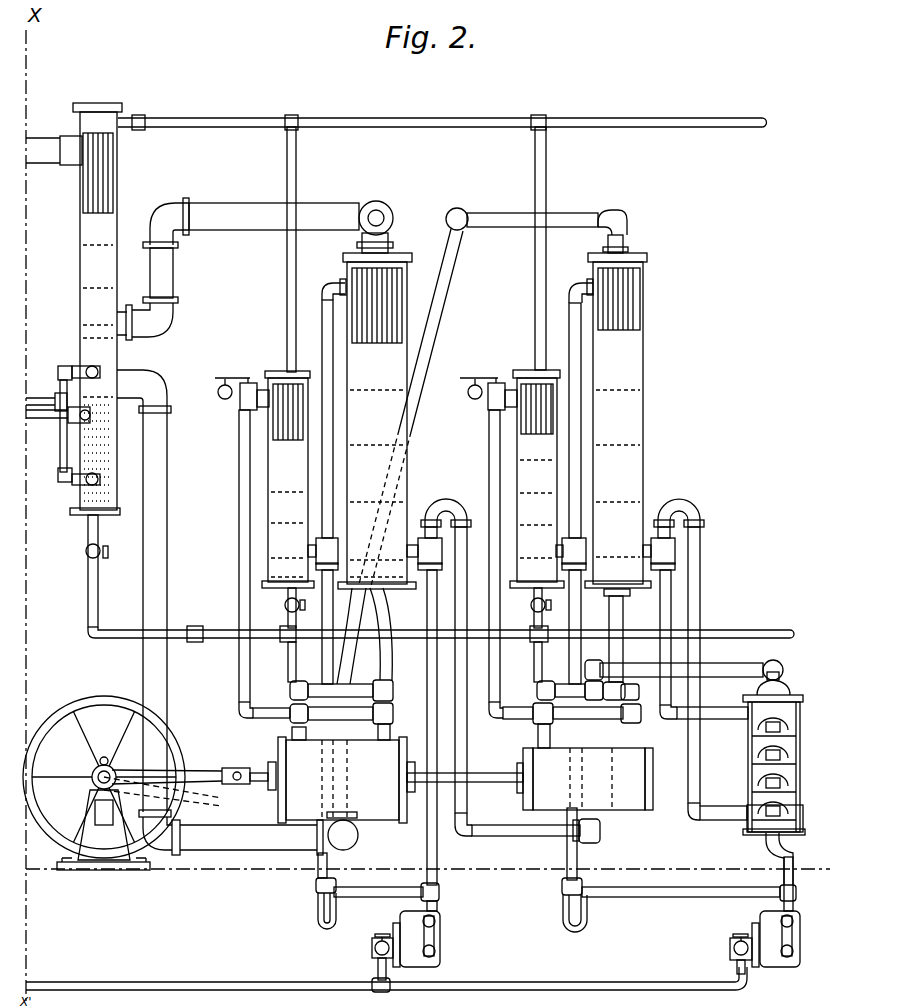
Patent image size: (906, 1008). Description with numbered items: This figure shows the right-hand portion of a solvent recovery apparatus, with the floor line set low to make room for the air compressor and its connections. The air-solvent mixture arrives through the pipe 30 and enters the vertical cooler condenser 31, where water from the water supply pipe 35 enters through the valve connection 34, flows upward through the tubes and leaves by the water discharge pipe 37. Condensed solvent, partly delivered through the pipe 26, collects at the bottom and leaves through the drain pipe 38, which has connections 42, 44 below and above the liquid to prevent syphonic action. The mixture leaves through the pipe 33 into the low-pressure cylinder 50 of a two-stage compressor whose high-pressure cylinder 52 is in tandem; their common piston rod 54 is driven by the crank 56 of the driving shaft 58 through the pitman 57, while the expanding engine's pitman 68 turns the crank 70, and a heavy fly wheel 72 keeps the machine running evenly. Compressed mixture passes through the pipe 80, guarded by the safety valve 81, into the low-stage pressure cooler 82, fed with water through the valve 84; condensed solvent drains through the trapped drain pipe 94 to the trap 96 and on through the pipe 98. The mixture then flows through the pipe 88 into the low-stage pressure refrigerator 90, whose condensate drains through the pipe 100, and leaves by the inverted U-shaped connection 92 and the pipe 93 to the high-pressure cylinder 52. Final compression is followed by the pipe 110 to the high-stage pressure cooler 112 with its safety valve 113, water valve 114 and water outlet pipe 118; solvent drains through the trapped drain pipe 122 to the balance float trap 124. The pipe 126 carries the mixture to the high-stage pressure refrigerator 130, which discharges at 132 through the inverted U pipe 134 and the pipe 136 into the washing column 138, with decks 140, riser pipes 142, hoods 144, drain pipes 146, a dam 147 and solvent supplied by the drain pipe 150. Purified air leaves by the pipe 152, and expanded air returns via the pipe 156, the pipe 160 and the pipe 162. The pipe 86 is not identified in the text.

The pipe 26 is at (52, 420).
The pipe 30 is at (42, 140).
The cooler condenser 31 is at (88, 224).
The pipe 33 is at (155, 478).
The valve connection 34 is at (90, 553).
The water supply pipe 35 is at (88, 608).
The water discharge pipe 37 is at (405, 118).
The drain pipe 38 is at (43, 389).
The connection 42 is at (75, 485).
The connection 44 is at (75, 368).
The low-pressure cylinder 50 is at (377, 806).
The high-pressure cylinder 52 is at (625, 806).
The piston rod 54 is at (259, 773).
The crank 56 is at (105, 757).
The pitman 57 is at (195, 770).
The driving shaft 58 is at (98, 770).
The pitman 68 is at (205, 786).
The crank 70 is at (95, 797).
The fly wheel 72 is at (80, 706).
The pipe 80 is at (240, 580).
The safety valve 81 is at (252, 382).
The low-stage pressure cooler 82 is at (282, 475).
The valve 84 is at (285, 606).
The pipe 86 is at (287, 300).
The pipe 88 is at (325, 352).
The low-stage pressure refrigerator 90 is at (405, 253).
The inverted U-shaped connection 92 is at (470, 505).
The pipe 93 is at (460, 763).
The trapped drain pipe 94 is at (333, 890).
The trap 96 is at (442, 938).
The pipe 98 is at (166, 984).
The pipe 100 is at (430, 670).
The pipe 110 is at (490, 450).
The high-stage pressure cooler 112 is at (520, 475).
The safety valve 113 is at (495, 380).
The valve 114 is at (534, 607).
The pipe 118 is at (529, 274).
The trapped drain pipe 122 is at (573, 876).
The balance float trap 124 is at (772, 918).
The pipe 126 is at (572, 297).
The high-stage pressure refrigerator 130 is at (625, 385).
The discharge 132 is at (650, 540).
The inverted U pipe 134 is at (690, 516).
The pipe 136 is at (720, 579).
The washing column 138 is at (765, 696).
The decks 140 is at (760, 760).
The riser pipes 142 is at (760, 786).
The caps or hoods 144 is at (760, 812).
The drain pipes 146 is at (760, 733).
The dam 147 is at (770, 832).
The drain pipe 150 is at (667, 615).
The pipe 152 is at (722, 670).
The pipe 156 is at (437, 302).
The pipe 160 is at (372, 625).
The pipe 162 is at (243, 215).